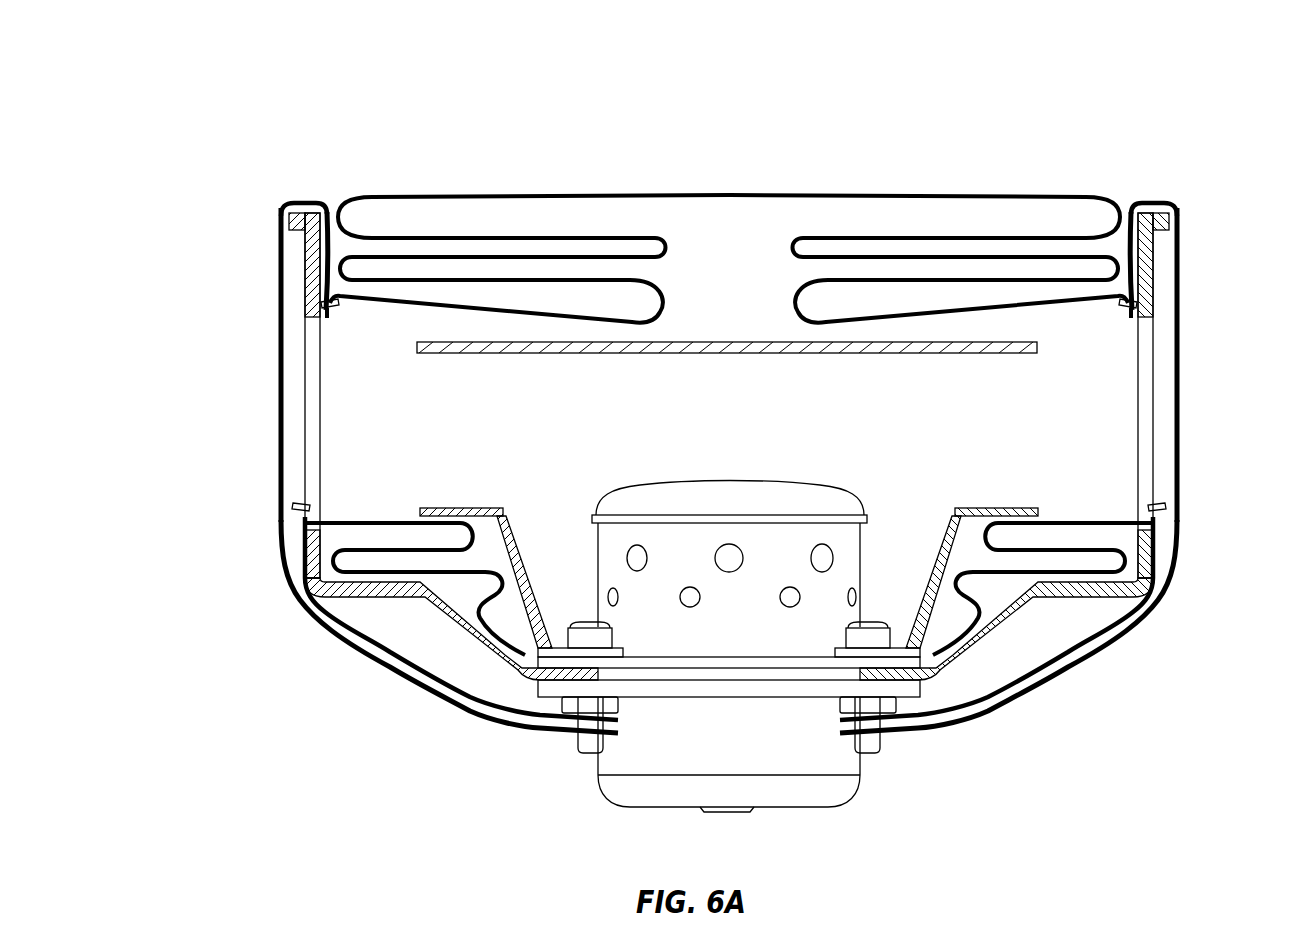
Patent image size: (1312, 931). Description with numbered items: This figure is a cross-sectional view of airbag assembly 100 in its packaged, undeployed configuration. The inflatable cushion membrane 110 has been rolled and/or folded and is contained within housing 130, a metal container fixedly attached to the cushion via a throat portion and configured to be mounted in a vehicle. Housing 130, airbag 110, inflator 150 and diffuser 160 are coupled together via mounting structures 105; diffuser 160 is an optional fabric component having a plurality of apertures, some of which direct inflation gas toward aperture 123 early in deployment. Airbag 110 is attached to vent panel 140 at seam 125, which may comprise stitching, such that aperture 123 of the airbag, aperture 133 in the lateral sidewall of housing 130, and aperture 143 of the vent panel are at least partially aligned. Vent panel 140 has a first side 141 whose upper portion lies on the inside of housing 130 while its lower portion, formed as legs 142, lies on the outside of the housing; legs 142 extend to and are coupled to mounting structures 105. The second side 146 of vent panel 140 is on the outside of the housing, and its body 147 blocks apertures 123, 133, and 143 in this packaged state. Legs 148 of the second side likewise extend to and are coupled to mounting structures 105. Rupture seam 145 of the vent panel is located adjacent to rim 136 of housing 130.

The airbag assembly 100 is at (697, 454).
The mounting structures 105 is at (576, 748).
The inflatable cushion membrane 110 is at (527, 198).
The aperture 123 is at (626, 395).
The seam 125 is at (337, 312).
The housing 130 is at (310, 610).
The aperture 133 is at (729, 395).
The rim 136 is at (280, 230).
The vent panel 140 is at (666, 439).
The first side 141 is at (333, 249).
The legs 142 is at (385, 632).
The aperture 143 is at (320, 395).
The rupture seam 145 is at (300, 202).
The second side 146 is at (280, 270).
The body 147 is at (626, 395).
The legs 148 is at (440, 690).
The inflator 150 is at (755, 763).
The diffuser 160 is at (1000, 510).